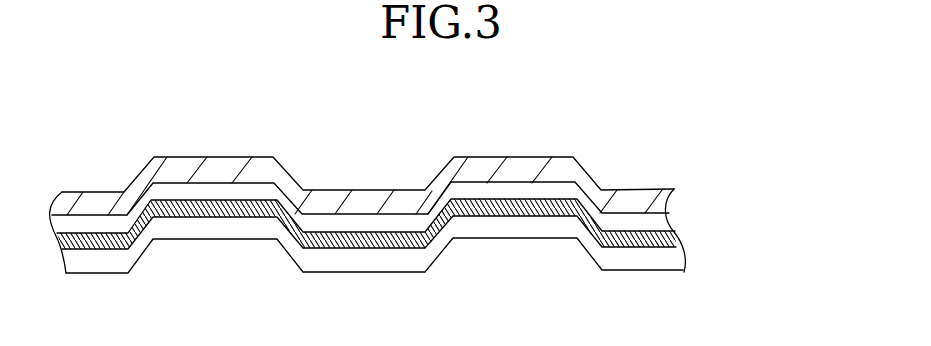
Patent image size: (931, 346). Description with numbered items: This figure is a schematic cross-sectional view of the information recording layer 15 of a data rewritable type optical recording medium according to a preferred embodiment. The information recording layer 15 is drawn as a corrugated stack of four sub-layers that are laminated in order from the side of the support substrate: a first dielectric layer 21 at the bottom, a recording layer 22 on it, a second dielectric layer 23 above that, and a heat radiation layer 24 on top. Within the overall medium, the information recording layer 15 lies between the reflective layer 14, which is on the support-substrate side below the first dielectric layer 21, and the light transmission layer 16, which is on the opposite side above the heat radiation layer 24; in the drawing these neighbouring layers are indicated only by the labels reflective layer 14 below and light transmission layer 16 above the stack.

The reflective layer 14 is at (392, 344).
The information recording layer 15 is at (540, 146).
The light transmission layer 16 is at (391, 128).
The first dielectric layer 21 is at (668, 258).
The recording layer 22 is at (671, 238).
The second dielectric layer 23 is at (666, 221).
The heat radiation layer 24 is at (676, 204).